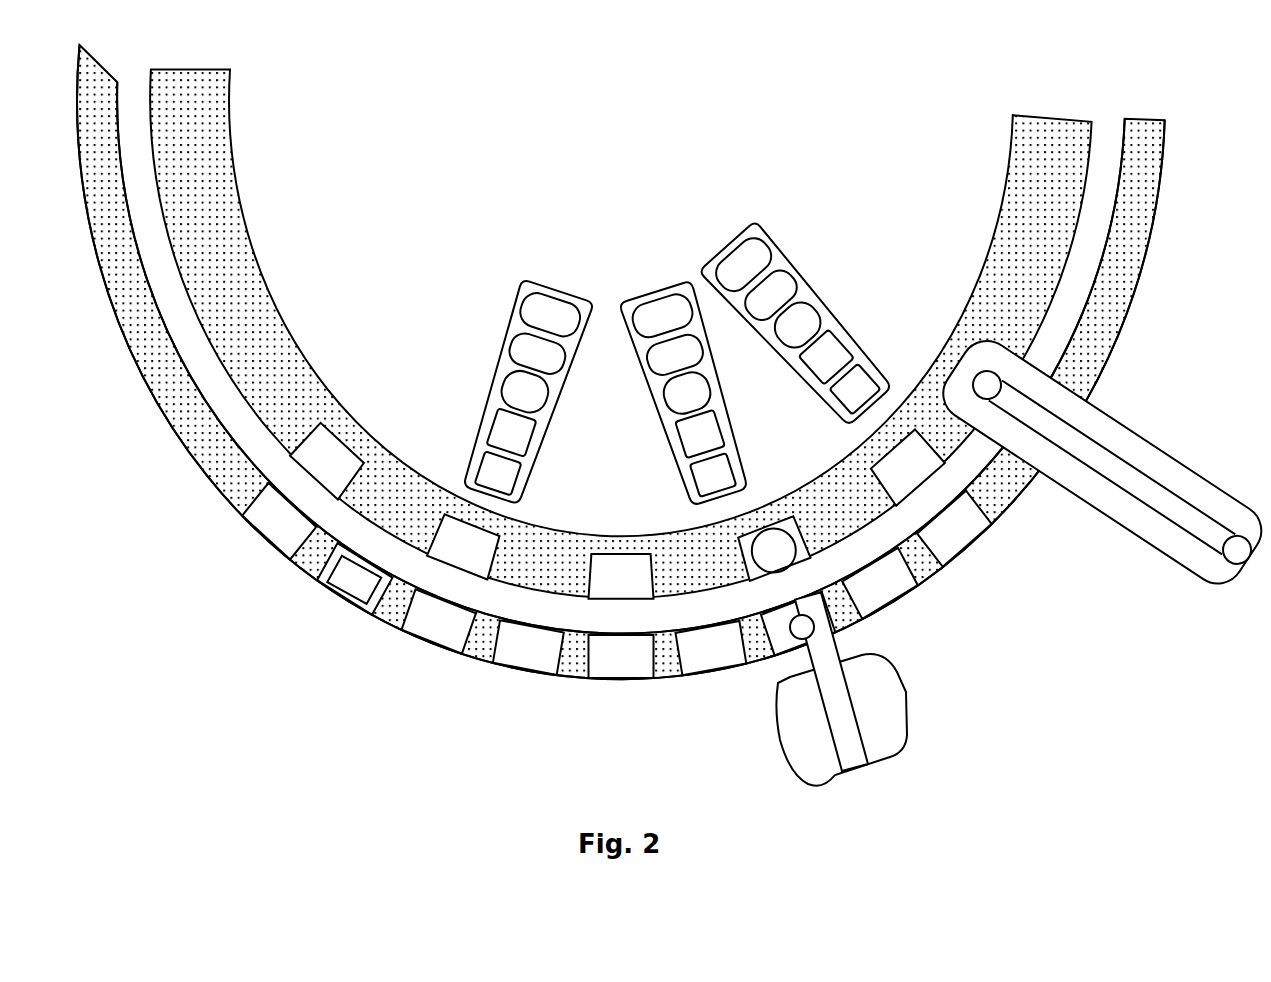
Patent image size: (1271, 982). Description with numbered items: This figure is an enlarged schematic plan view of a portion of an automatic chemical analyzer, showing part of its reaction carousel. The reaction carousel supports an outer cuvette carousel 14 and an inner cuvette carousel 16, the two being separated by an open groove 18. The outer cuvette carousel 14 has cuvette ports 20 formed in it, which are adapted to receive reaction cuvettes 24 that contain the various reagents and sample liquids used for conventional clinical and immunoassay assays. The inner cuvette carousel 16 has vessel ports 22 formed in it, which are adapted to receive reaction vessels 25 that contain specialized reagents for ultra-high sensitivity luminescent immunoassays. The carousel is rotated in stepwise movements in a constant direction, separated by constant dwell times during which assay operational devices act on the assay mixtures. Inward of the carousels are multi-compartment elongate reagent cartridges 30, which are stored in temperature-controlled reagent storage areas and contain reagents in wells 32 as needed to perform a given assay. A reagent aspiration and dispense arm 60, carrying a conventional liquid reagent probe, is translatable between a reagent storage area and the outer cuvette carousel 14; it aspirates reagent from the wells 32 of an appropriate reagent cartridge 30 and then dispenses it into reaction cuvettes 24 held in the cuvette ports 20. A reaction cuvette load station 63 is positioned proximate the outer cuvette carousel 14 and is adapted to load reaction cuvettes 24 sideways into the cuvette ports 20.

The outer cuvette carousel 14 is at (1008, 491).
The inner cuvette carousel 16 is at (425, 495).
The open groove 18 is at (935, 492).
The cuvette ports 20 is at (258, 543).
The vessel ports 22 is at (601, 590).
The reaction cuvettes 24 is at (338, 595).
The reaction vessels 25 is at (763, 565).
The reagent cartridges 30 is at (577, 273).
The wells 32 is at (799, 328).
The reagent aspiration and dispense arm 60 is at (1180, 568).
The reaction cuvette load station 63 is at (907, 740).